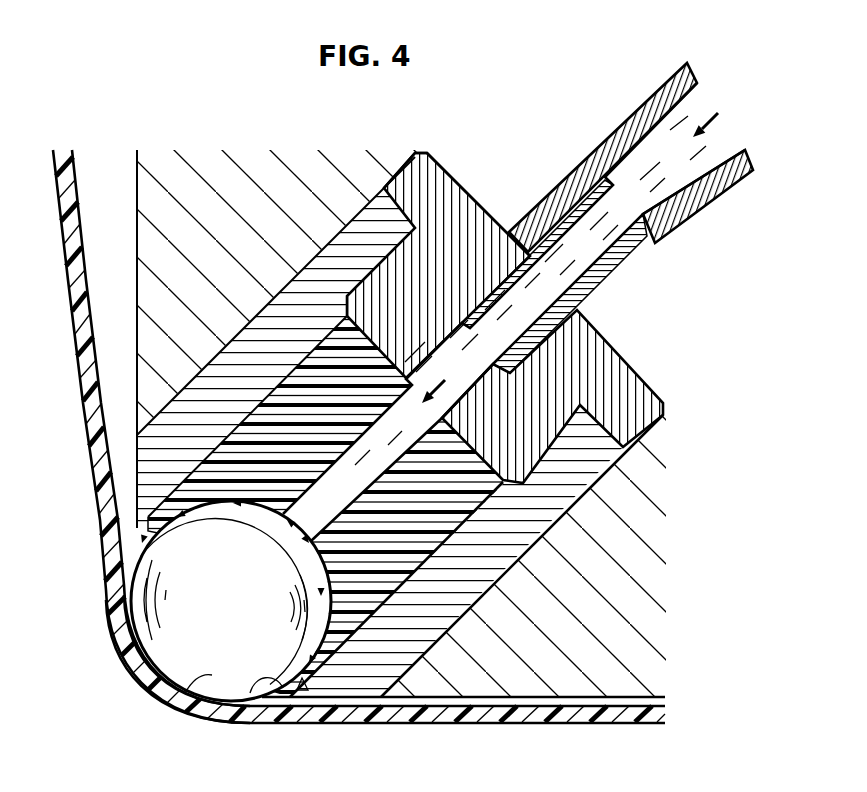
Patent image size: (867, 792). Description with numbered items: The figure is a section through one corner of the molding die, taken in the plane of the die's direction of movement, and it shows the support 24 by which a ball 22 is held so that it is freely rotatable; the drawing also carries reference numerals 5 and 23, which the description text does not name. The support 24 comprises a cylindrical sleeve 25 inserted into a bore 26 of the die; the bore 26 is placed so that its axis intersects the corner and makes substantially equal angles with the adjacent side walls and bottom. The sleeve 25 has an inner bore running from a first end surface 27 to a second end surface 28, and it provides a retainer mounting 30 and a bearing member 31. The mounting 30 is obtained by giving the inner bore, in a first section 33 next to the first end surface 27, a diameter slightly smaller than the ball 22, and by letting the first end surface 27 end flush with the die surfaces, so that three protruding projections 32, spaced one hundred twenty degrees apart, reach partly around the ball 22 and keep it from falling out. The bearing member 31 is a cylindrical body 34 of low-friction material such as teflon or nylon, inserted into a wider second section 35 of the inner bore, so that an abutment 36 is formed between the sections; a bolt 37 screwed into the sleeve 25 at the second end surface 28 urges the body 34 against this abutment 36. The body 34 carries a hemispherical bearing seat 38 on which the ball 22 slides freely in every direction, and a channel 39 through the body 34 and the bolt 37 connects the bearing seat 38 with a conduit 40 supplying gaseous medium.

The housing wall 5 is at (112, 546).
The ball 22 is at (210, 675).
The ball 23 is at (207, 675).
The support 24 is at (236, 338).
The cylindrical sleeve 25 is at (200, 418).
The bore 26 is at (270, 303).
The first end surface 27 is at (137, 489).
The second end surface 28 is at (408, 214).
The retainer mounting 30 is at (200, 512).
The bearing member 31 is at (347, 618).
The protruding projections 32 is at (288, 680).
The first section 33 is at (242, 675).
The cylindrical body 34 is at (375, 583).
The second section 35 is at (410, 567).
The abutment 36 is at (300, 694).
The bolt 37 is at (460, 228).
The bearing seat 38 is at (223, 603).
The channel 39 is at (415, 447).
The conduit 40 is at (612, 134).